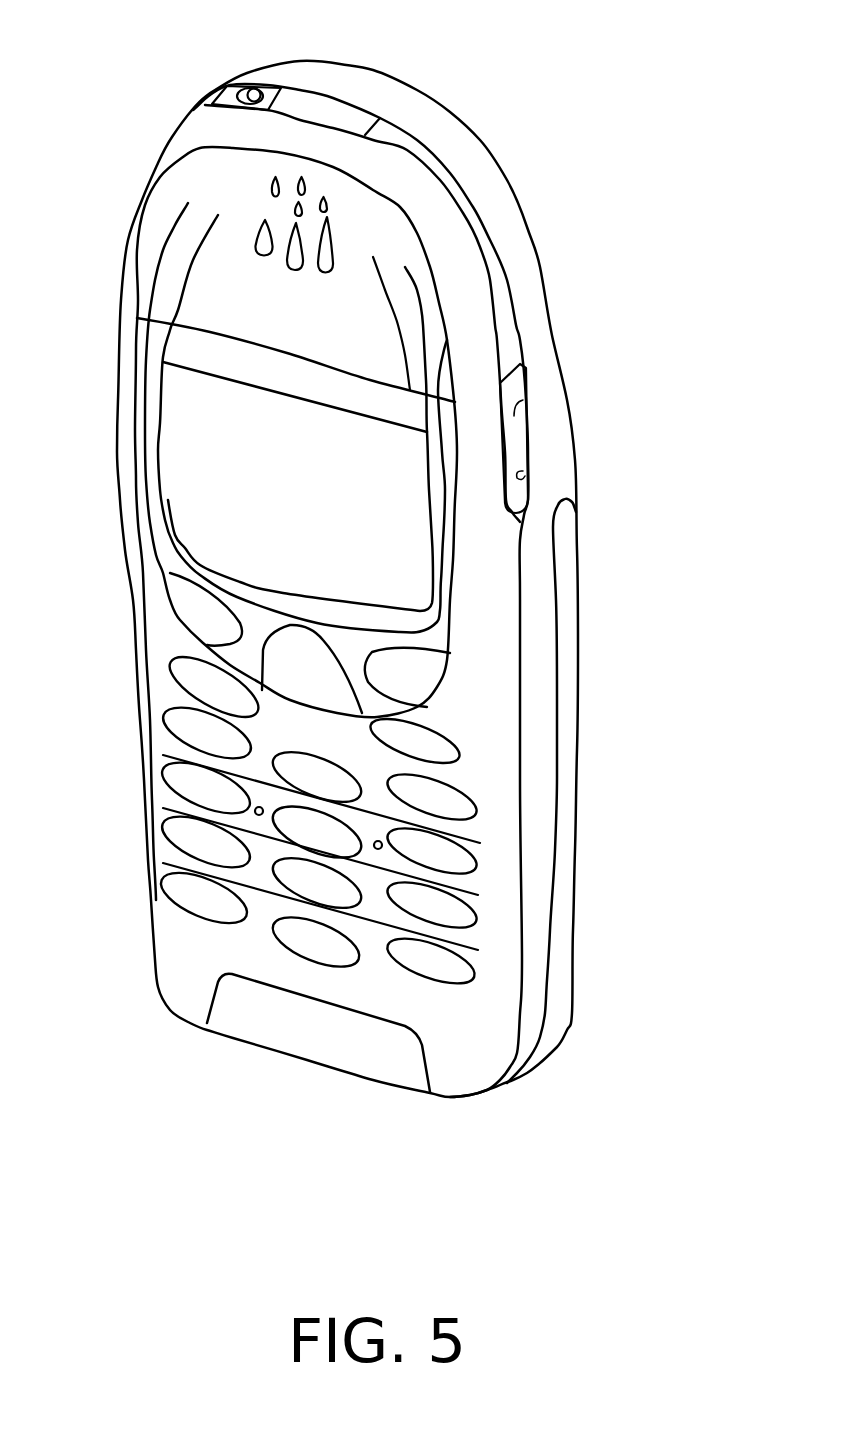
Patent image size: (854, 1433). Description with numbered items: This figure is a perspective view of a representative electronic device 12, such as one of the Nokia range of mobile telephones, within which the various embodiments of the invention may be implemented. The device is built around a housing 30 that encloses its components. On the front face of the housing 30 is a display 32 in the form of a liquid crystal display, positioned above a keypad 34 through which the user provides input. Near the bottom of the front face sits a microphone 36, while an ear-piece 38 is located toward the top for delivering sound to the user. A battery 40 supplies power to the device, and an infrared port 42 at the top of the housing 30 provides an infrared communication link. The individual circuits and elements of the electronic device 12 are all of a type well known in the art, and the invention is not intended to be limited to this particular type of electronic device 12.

The electronic device 12 is at (500, 72).
The housing 30 is at (532, 274).
The display 32 is at (403, 545).
The keypad 34 is at (430, 968).
The microphone 36 is at (240, 1018).
The ear-piece 38 is at (283, 218).
The battery 40 is at (566, 944).
The infrared port 42 is at (327, 107).